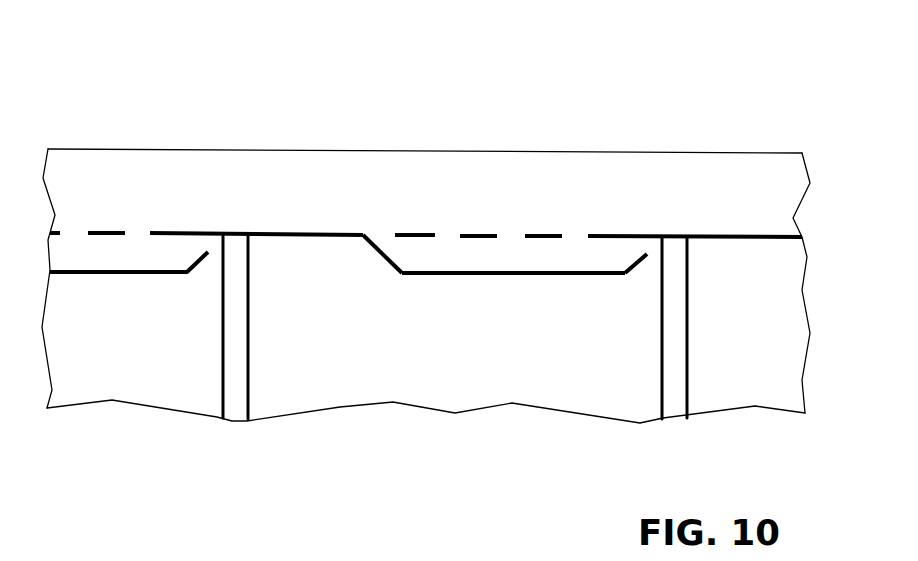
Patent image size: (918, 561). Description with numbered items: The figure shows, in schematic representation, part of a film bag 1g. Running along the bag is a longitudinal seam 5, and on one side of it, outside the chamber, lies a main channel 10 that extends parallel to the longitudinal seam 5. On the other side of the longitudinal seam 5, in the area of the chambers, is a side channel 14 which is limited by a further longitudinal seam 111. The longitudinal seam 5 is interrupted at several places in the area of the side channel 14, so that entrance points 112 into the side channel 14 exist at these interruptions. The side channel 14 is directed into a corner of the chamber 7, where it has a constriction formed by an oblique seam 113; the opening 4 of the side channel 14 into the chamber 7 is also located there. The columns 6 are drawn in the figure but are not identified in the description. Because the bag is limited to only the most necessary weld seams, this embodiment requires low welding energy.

The main channel 10 is at (426, 244).
The chamber 7 is at (426, 441).
The columns 6 is at (222, 383).
The longitudinal seam 5 is at (426, 157).
The entrance points 112 is at (453, 160).
The side channel 14 is at (513, 302).
The longitudinal seam 111 is at (388, 302).
The oblique seam 113 is at (619, 312).
The opening 4 is at (349, 179).
The film bag 1g is at (712, 30).